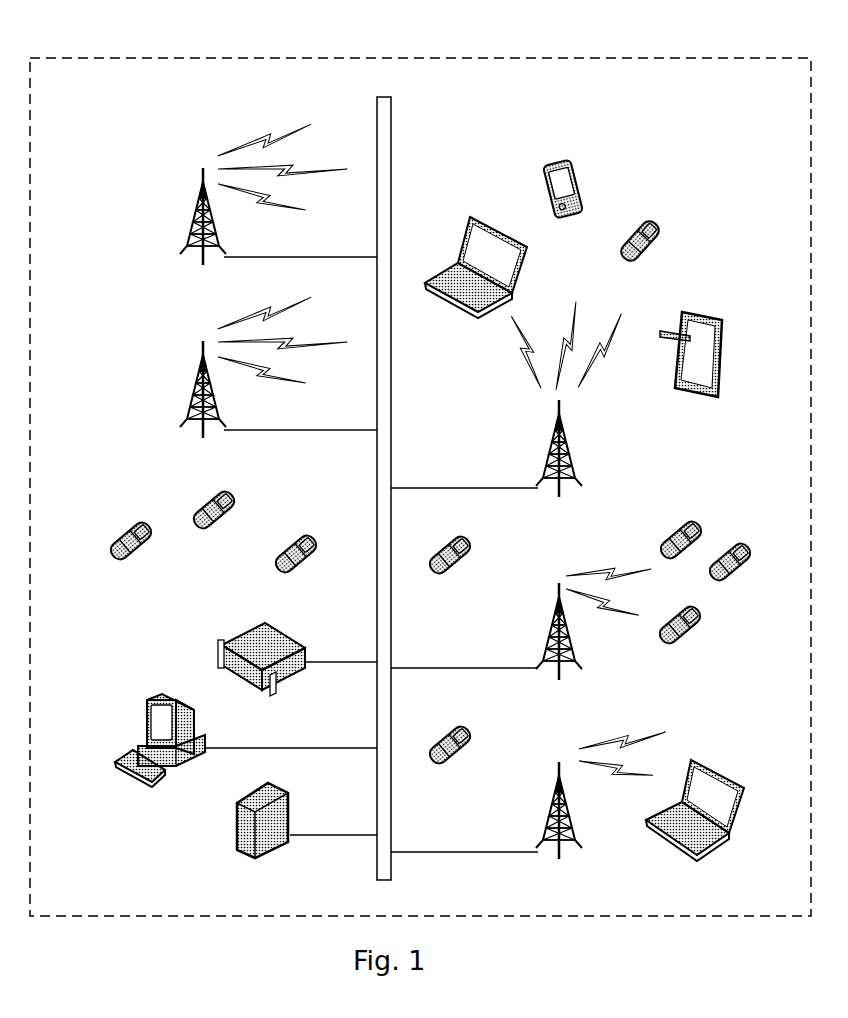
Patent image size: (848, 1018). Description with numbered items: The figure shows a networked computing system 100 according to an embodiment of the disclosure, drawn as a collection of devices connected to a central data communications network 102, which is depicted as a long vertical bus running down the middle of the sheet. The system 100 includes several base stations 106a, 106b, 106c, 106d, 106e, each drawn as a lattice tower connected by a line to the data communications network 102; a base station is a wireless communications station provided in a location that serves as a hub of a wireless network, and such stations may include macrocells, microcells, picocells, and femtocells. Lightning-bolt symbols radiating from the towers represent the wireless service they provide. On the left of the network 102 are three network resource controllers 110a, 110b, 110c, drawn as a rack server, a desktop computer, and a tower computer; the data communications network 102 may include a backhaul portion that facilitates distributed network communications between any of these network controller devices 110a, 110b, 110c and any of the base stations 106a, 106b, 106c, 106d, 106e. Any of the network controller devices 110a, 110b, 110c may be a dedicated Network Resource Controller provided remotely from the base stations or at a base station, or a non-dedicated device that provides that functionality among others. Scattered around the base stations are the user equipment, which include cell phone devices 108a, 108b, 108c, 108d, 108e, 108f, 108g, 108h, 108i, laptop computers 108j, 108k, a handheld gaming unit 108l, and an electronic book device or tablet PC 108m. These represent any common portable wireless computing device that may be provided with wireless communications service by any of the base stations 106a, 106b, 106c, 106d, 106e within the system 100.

The networked computing system 100 is at (290, 32).
The data communications network 102 is at (376, 112).
The base station 106a is at (193, 215).
The base station 106b is at (193, 388).
The base station 106c is at (548, 802).
The base station 106d is at (548, 627).
The base station 106e is at (575, 457).
The cell phone device 108a is at (122, 538).
The cell phone device 108b is at (210, 494).
The cell phone device 108c is at (278, 578).
The cell phone device 108d is at (474, 725).
The cell phone device 108e is at (700, 645).
The cell phone device 108f is at (750, 580).
The cell phone device 108g is at (705, 520).
The cell phone device 108h is at (474, 537).
The cell phone device 108i is at (668, 227).
The laptop computer 108j is at (722, 762).
The laptop computer 108k is at (473, 217).
The handheld gaming unit 108l is at (582, 177).
The electronic book device or tablet PC 108m is at (723, 322).
The network resource controller 110a is at (222, 660).
The network resource controller 110b is at (147, 700).
The network resource controller 110c is at (236, 840).